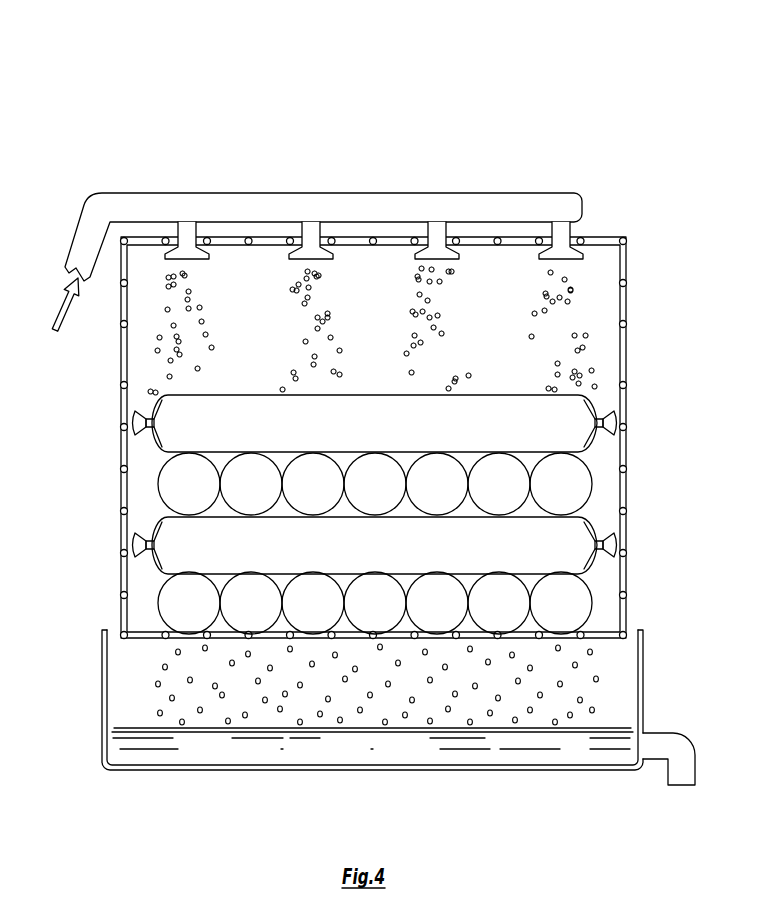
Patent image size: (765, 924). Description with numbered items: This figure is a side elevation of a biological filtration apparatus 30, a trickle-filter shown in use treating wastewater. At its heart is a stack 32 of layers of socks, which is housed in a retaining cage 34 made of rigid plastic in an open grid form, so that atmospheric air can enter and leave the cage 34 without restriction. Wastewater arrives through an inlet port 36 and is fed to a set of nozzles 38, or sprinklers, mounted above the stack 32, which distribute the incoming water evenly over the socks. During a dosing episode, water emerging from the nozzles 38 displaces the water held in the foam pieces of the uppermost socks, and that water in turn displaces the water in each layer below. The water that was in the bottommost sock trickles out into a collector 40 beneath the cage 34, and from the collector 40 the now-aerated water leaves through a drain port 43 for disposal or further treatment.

The biological filtration apparatus 30 is at (512, 173).
The stack 32 is at (555, 493).
The retaining cage 34 is at (122, 470).
The inlet port 36 is at (82, 247).
The nozzles 38 is at (307, 256).
The collector 40 is at (185, 767).
The drain port 43 is at (675, 787).